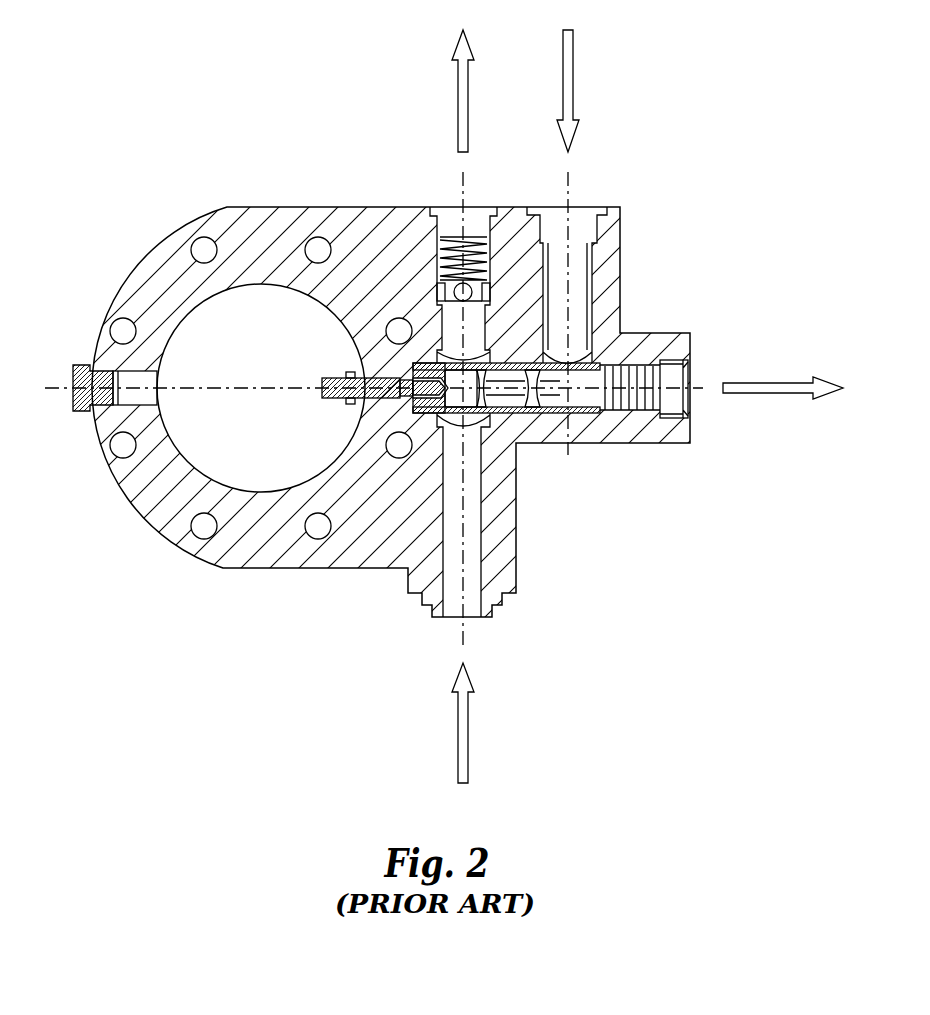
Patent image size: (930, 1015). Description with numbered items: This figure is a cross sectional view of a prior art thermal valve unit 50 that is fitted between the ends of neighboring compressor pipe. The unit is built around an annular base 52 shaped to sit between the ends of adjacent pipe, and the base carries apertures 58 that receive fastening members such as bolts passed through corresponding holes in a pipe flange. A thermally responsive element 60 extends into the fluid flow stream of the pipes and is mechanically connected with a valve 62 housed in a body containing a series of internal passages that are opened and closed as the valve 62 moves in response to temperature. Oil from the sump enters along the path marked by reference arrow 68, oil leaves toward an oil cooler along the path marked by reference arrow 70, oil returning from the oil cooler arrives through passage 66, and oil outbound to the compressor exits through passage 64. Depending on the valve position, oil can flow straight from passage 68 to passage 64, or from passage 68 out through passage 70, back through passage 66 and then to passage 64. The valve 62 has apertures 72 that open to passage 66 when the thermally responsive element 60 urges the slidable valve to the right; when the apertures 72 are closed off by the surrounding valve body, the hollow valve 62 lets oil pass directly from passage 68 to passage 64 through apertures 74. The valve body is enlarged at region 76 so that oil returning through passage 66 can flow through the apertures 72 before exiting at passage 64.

The thermal valve unit 50 is at (84, 183).
The base 52 is at (228, 207).
The apertures 58 is at (203, 237).
The thermally responsive element 60 is at (337, 376).
The valve 62 is at (512, 412).
The oil outbound to the compressor 64 is at (785, 383).
The oil returning from the oil cooler 66 is at (563, 100).
The oil from the sump 68 is at (457, 745).
The oil to an oil cooler 70 is at (458, 82).
The apertures 72 is at (574, 362).
The apertures 74 is at (489, 378).
The enlarged portion of valve body 76 is at (470, 421).